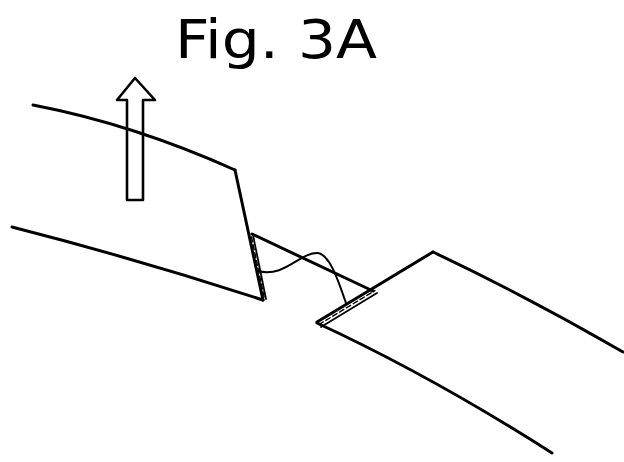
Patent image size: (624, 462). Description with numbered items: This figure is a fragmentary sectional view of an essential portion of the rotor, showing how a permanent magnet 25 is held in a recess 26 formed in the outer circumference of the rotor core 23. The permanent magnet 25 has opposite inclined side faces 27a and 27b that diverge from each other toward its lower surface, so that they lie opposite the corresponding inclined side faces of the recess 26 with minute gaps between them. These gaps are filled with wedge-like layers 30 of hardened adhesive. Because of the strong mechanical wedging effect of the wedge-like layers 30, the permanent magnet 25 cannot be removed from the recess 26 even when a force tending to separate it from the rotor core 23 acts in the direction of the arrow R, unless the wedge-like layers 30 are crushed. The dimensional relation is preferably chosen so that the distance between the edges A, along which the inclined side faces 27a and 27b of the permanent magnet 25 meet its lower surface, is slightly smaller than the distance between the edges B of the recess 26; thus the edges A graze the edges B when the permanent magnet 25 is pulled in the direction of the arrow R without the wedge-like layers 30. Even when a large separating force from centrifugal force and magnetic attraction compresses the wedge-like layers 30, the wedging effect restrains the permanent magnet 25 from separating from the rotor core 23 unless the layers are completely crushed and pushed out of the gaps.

The rotor core 23 is at (298, 307).
The permanent magnet 25 is at (97, 237).
The recess 26 is at (181, 279).
The inclined side face 27a is at (420, 259).
The inclined side face 27b is at (241, 190).
The wedge-like layer 30 is at (317, 260).
The edge of permanent magnet A is at (258, 302).
The edge of recess B is at (260, 232).
The arrow indicating separating direction R is at (145, 113).